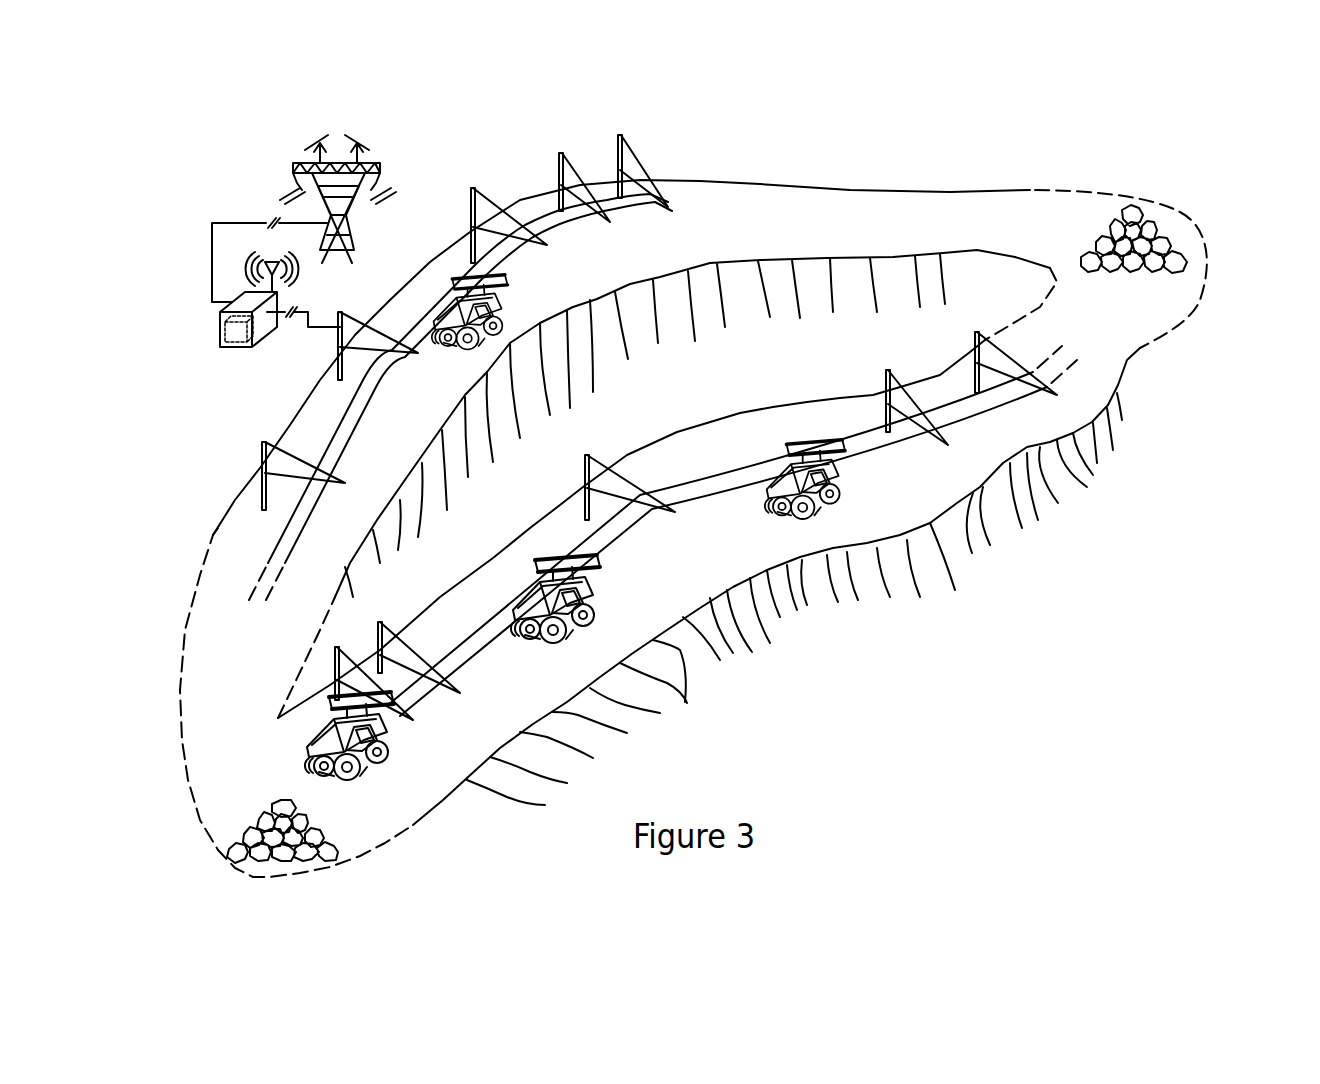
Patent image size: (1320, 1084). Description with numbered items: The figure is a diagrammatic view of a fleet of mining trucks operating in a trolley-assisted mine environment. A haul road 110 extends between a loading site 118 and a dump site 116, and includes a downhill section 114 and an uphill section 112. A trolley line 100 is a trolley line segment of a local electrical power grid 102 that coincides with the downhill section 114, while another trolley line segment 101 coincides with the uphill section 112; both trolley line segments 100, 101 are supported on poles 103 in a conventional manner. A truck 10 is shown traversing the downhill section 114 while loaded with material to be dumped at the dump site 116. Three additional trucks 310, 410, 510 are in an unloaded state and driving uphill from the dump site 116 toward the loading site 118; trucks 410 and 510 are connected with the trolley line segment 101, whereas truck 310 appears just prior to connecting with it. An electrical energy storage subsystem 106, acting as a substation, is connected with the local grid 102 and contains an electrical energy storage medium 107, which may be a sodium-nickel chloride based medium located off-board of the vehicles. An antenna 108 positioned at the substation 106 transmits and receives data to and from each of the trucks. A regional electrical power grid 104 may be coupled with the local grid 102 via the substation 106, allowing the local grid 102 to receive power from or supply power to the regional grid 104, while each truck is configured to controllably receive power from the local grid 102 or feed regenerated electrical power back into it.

The truck 10 is at (504, 302).
The trolley line 100 is at (646, 212).
The trolley line segment 101 is at (473, 661).
The local electrical power grid 102 is at (488, 367).
The poles 103 is at (706, 526).
The regional electrical power grid 104 is at (364, 214).
The electrical energy storage subsystem 106 is at (223, 337).
The electrical energy storage medium 107 is at (240, 344).
The antenna 108 is at (275, 279).
The haul road 110 is at (1056, 189).
The uphill section 112 is at (452, 797).
The downhill section 114 is at (218, 528).
The dump site 116 is at (256, 862).
The loading site 118 is at (1168, 278).
The truck 310 is at (348, 778).
The truck 410 is at (547, 645).
The truck 510 is at (796, 514).